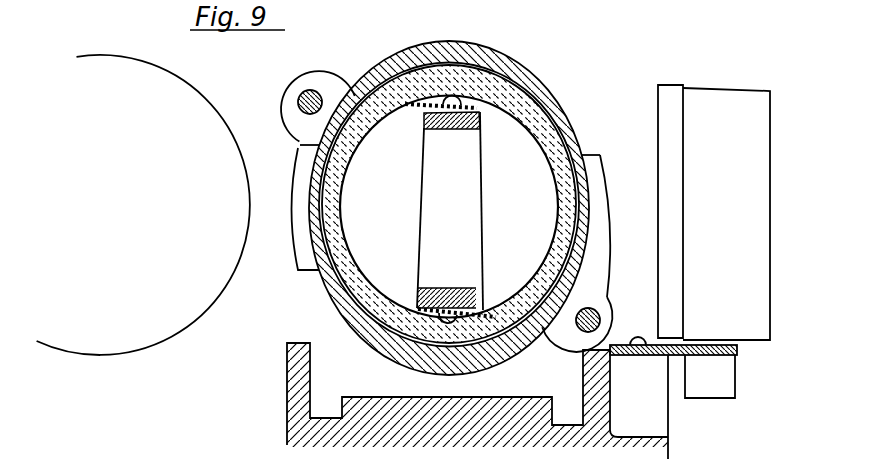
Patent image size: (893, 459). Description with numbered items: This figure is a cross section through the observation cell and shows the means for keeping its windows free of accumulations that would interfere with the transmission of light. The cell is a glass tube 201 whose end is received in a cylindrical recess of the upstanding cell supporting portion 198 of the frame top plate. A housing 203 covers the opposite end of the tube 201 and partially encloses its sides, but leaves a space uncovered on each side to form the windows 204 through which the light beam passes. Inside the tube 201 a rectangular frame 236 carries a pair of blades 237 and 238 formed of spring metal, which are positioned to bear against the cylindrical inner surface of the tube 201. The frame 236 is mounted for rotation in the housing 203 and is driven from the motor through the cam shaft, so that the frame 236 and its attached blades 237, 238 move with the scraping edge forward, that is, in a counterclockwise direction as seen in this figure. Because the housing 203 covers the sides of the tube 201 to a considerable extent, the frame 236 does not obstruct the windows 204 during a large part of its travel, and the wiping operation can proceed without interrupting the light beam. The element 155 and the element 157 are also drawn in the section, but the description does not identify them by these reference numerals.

The drum 155 is at (198, 233).
The support plate 157 is at (714, 212).
The cell supporting portion 198 is at (297, 377).
The glass tube 201 is at (547, 117).
The housing 203 is at (508, 57).
The windows 204 is at (302, 167).
The rectangular frame 236 is at (450, 211).
The blade 237 is at (412, 112).
The blade 238 is at (490, 315).